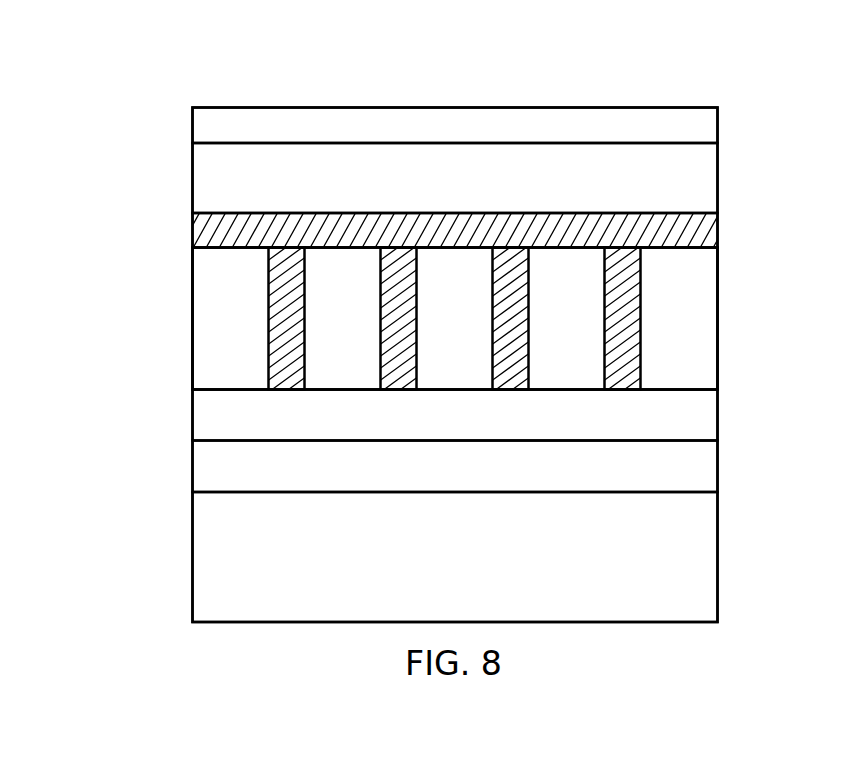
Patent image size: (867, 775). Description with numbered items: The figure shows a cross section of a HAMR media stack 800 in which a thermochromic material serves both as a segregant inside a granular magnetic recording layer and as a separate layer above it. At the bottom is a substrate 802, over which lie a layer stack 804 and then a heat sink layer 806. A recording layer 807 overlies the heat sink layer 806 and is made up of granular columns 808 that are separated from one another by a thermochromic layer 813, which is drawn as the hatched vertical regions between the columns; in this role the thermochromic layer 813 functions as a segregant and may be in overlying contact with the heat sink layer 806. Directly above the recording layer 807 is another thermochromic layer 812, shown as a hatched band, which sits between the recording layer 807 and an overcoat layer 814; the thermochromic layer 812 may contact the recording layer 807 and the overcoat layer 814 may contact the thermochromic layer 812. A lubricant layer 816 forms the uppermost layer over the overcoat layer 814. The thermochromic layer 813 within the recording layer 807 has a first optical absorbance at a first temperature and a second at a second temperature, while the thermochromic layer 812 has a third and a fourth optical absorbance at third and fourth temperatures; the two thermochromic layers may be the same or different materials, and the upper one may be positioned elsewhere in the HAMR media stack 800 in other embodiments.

The HAMR media stack 800 is at (90, 103).
The substrate 802 is at (475, 567).
The layer stack 804 is at (475, 477).
The heat sink layer 806 is at (475, 426).
The recording layer 807 is at (174, 247).
The granular columns 808 is at (717, 328).
The thermochromic layer 812 is at (713, 228).
The thermochromic layer 813 is at (680, 435).
The overcoat layer 814 is at (475, 187).
The lubricant layer 816 is at (475, 134).